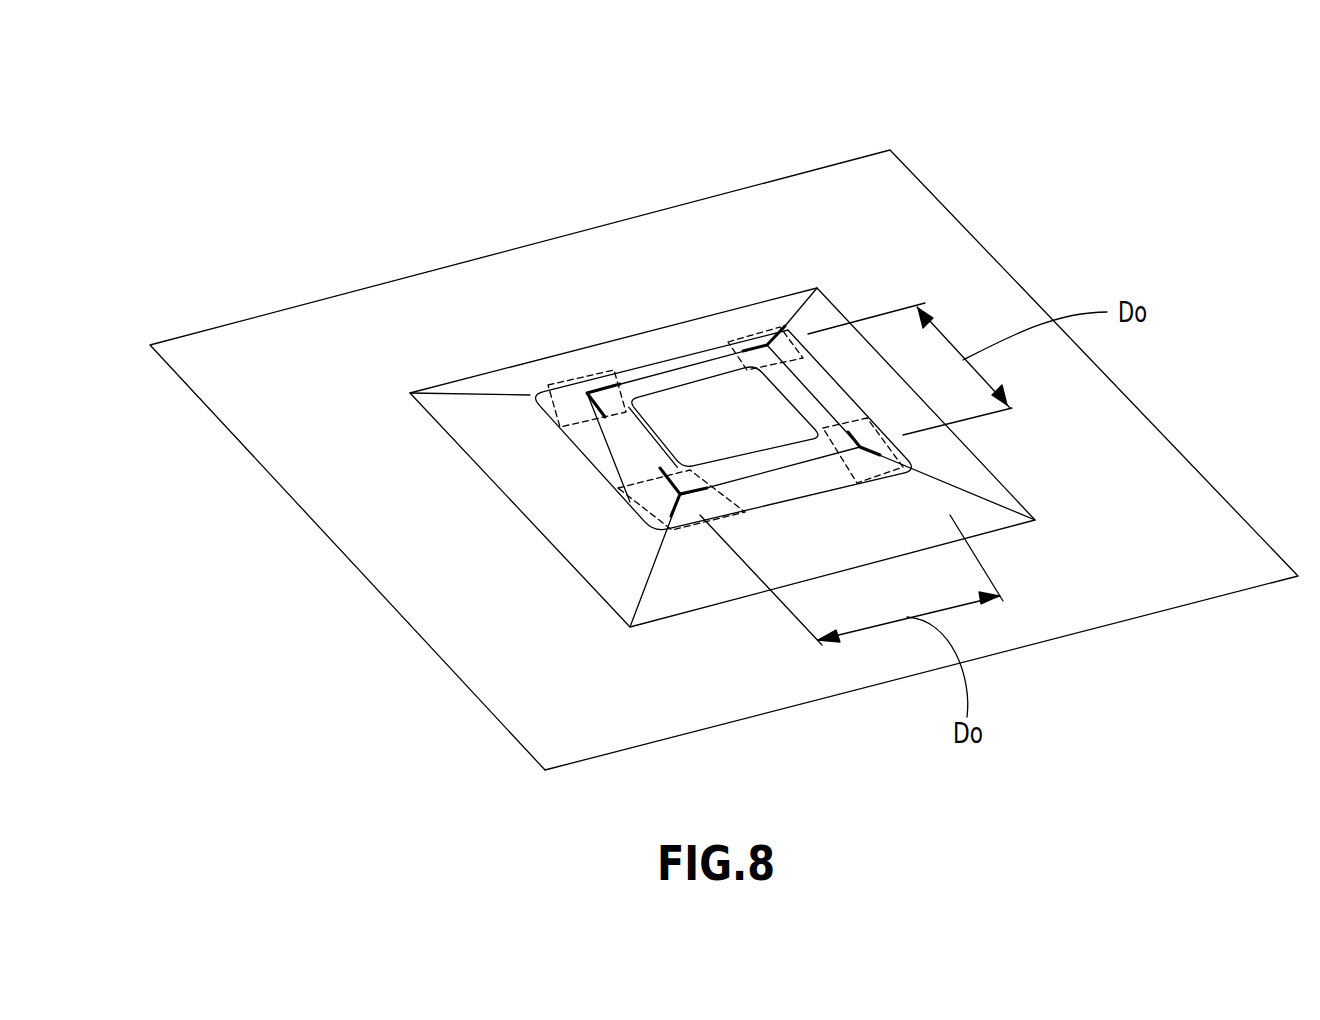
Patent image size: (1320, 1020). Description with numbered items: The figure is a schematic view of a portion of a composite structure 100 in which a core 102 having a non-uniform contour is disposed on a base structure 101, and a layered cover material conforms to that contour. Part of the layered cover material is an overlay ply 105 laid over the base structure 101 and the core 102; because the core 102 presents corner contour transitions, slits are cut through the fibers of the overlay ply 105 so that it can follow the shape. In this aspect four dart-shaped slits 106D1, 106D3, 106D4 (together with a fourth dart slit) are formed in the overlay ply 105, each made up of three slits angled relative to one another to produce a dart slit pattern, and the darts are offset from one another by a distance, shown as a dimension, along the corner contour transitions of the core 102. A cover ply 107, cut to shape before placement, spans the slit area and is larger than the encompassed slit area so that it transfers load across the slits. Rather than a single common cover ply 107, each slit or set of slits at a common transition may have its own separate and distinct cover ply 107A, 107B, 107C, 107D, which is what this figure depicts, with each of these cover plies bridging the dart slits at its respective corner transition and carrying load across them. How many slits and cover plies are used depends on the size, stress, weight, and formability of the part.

The composite structure 100 is at (1060, 90).
The base structure 101 is at (898, 181).
The core 102 is at (542, 358).
The overlay ply 105 is at (950, 515).
The cover ply 107 is at (607, 457).
The cover ply 107A is at (912, 459).
The cover ply 107B is at (806, 338).
The cover ply 107C is at (593, 378).
The cover ply 107D is at (700, 513).
The slit 106D1 is at (903, 437).
The slit 106D3 is at (567, 405).
The slit 106D4 is at (750, 348).